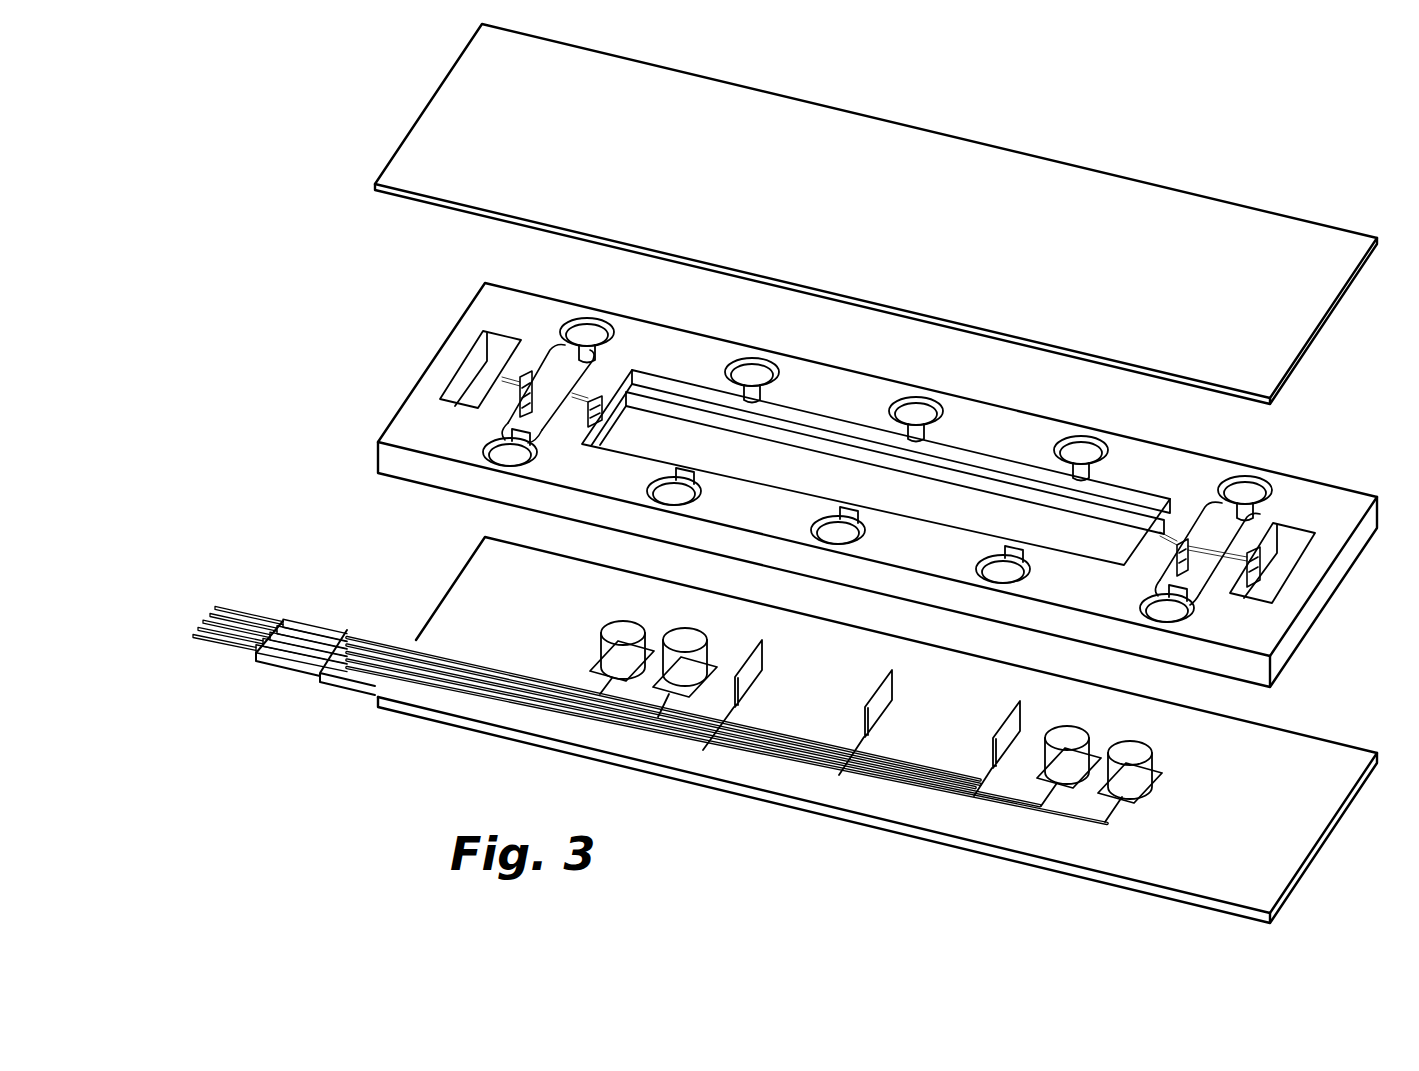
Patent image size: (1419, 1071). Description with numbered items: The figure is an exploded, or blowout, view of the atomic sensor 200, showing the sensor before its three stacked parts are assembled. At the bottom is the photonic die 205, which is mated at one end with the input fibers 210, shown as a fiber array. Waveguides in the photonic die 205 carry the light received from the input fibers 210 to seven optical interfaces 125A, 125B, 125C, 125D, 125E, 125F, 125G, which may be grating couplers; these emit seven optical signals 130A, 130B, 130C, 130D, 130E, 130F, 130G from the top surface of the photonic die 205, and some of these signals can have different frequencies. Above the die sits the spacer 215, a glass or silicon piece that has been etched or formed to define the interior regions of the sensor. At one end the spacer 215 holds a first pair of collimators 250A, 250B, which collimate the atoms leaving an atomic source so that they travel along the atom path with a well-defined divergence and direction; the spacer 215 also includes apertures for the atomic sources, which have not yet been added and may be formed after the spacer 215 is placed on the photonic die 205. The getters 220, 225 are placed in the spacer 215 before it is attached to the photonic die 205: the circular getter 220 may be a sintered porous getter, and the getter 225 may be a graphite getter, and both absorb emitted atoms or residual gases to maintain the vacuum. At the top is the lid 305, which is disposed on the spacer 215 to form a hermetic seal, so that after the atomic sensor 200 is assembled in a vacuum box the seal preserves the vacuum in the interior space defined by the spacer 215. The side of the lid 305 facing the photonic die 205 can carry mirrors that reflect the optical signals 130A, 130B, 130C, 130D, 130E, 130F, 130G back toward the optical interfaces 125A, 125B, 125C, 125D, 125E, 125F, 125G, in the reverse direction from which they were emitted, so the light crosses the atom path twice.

The atomic sensor 200 is at (1072, 82).
The lid 305 is at (430, 104).
The spacer 215 is at (810, 467).
The photonic die 205 is at (472, 556).
The input fibers 210 is at (335, 693).
The collimator 250A is at (516, 384).
The collimator 250B is at (578, 402).
The getter 225 is at (975, 463).
The getter 220 is at (1246, 486).
The optical signal 130A is at (622, 632).
The optical signal 130B is at (685, 639).
The optical signal 130C is at (764, 640).
The optical signal 130D is at (889, 677).
The optical signal 130E is at (1005, 722).
The optical signal 130F is at (1067, 737).
The optical signal 130G is at (1129, 745).
The optical interface 125A is at (590, 670).
The optical interface 125B is at (708, 668).
The optical interface 125C is at (763, 672).
The optical interface 125D is at (893, 705).
The optical interface 125E is at (992, 768).
The optical interface 125F is at (1078, 786).
The optical interface 125G is at (1162, 775).